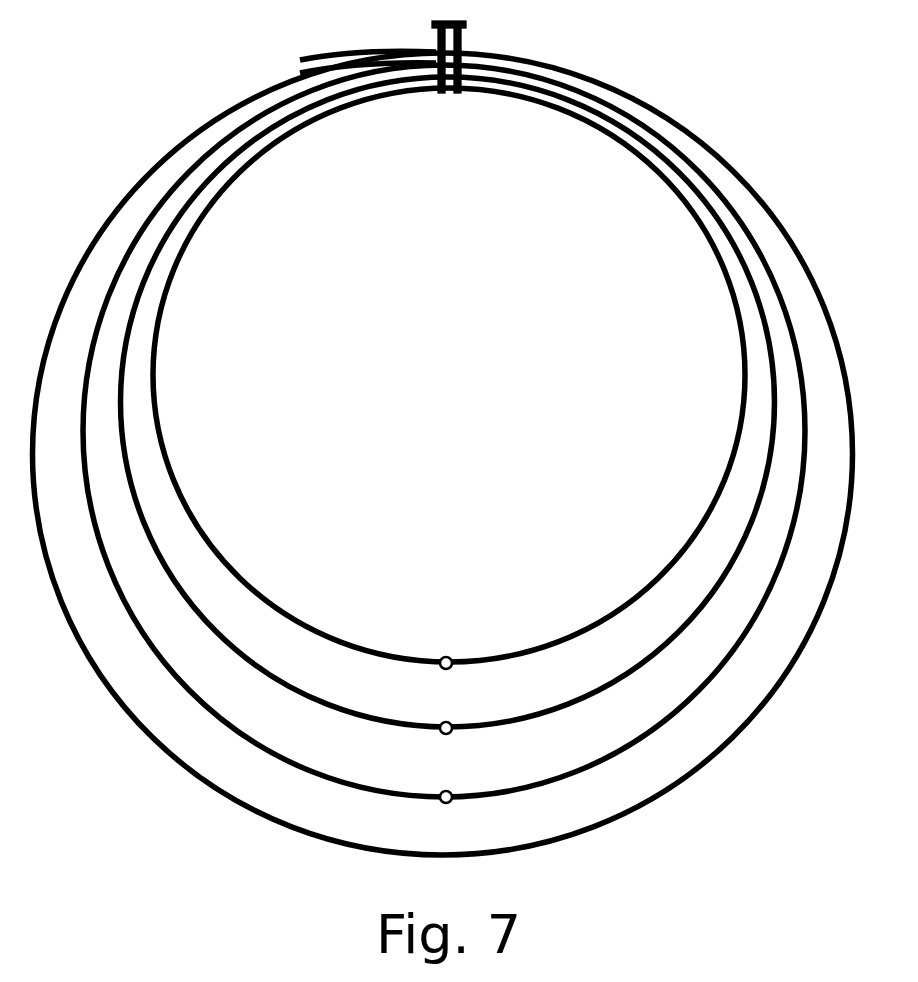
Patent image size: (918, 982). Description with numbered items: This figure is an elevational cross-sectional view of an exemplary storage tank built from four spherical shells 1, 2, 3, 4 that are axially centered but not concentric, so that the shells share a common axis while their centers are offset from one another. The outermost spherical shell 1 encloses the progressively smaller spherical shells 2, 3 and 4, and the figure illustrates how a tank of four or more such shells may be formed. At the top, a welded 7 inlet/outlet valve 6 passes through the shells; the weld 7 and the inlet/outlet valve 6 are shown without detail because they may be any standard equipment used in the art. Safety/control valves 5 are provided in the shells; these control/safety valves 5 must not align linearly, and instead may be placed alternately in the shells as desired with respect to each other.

The spherical shell 1 is at (67, 507).
The spherical shell 2 is at (137, 551).
The spherical shell 3 is at (222, 594).
The spherical shell 4 is at (360, 612).
The safety/control valves 5 is at (452, 665).
The inlet/outlet valve 6 is at (466, 40).
The weld 7 is at (436, 86).